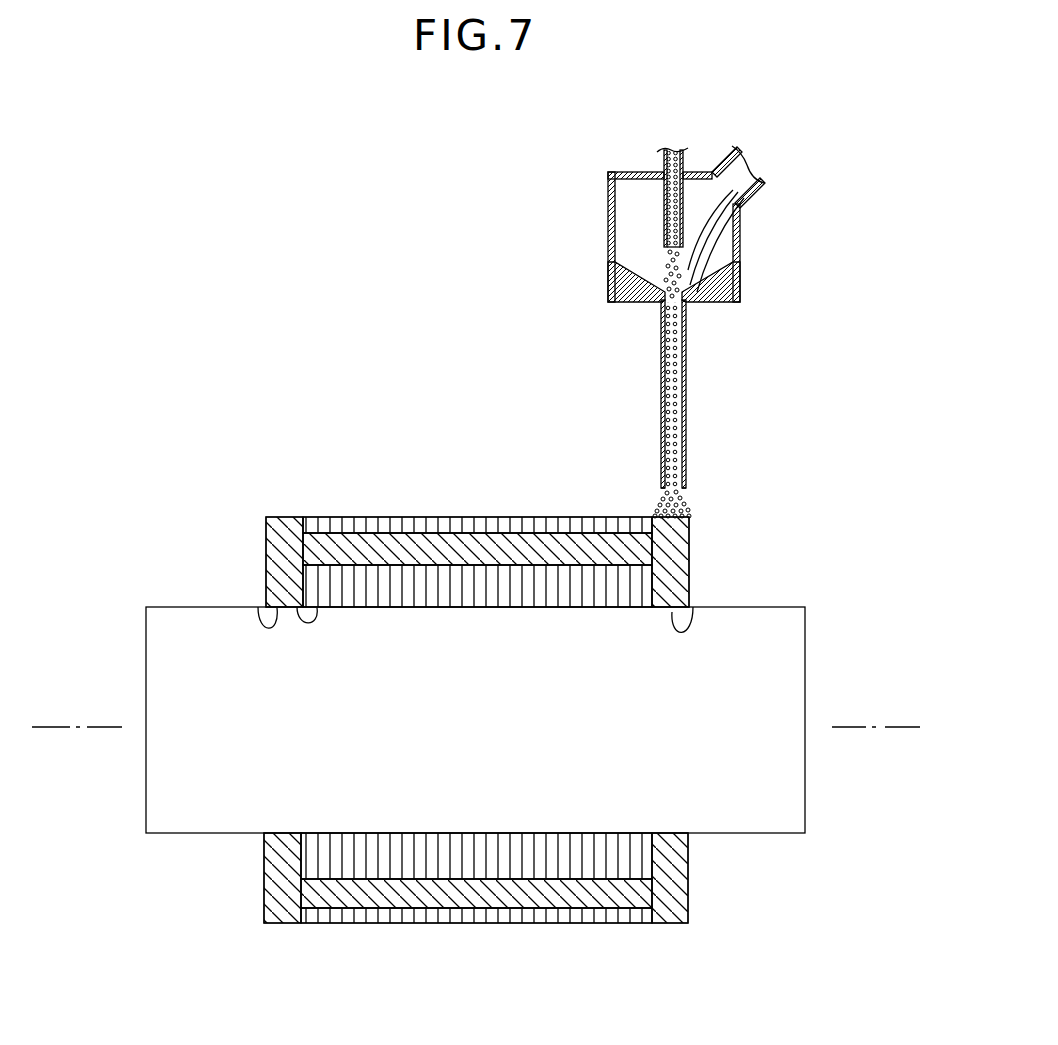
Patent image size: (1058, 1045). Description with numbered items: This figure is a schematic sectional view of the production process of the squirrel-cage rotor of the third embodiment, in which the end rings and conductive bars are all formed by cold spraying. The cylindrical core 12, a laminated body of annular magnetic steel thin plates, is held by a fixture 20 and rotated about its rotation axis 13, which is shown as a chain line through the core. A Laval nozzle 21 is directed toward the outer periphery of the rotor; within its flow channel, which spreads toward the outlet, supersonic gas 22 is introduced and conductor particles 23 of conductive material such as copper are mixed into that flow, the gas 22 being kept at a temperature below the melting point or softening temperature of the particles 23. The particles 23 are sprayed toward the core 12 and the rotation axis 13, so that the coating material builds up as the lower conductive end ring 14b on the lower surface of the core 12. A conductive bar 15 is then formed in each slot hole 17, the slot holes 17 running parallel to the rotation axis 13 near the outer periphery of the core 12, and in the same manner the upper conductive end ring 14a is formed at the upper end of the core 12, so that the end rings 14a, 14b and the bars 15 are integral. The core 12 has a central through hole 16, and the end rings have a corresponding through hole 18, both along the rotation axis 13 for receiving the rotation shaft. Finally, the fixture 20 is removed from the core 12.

The core 12 is at (362, 923).
The rotation axis 13 is at (902, 729).
The upper conductive end ring 14a is at (277, 923).
The lower conductive end ring 14b is at (688, 905).
The conductive bars 15 is at (390, 535).
The through hole 16 is at (297, 603).
The slot holes 17 is at (480, 535).
The through hole 18 is at (258, 607).
The fixture 20 is at (175, 607).
The Laval nozzle 21 is at (562, 198).
The supersonic gas 22 is at (700, 246).
The conductor particles 23 is at (683, 508).